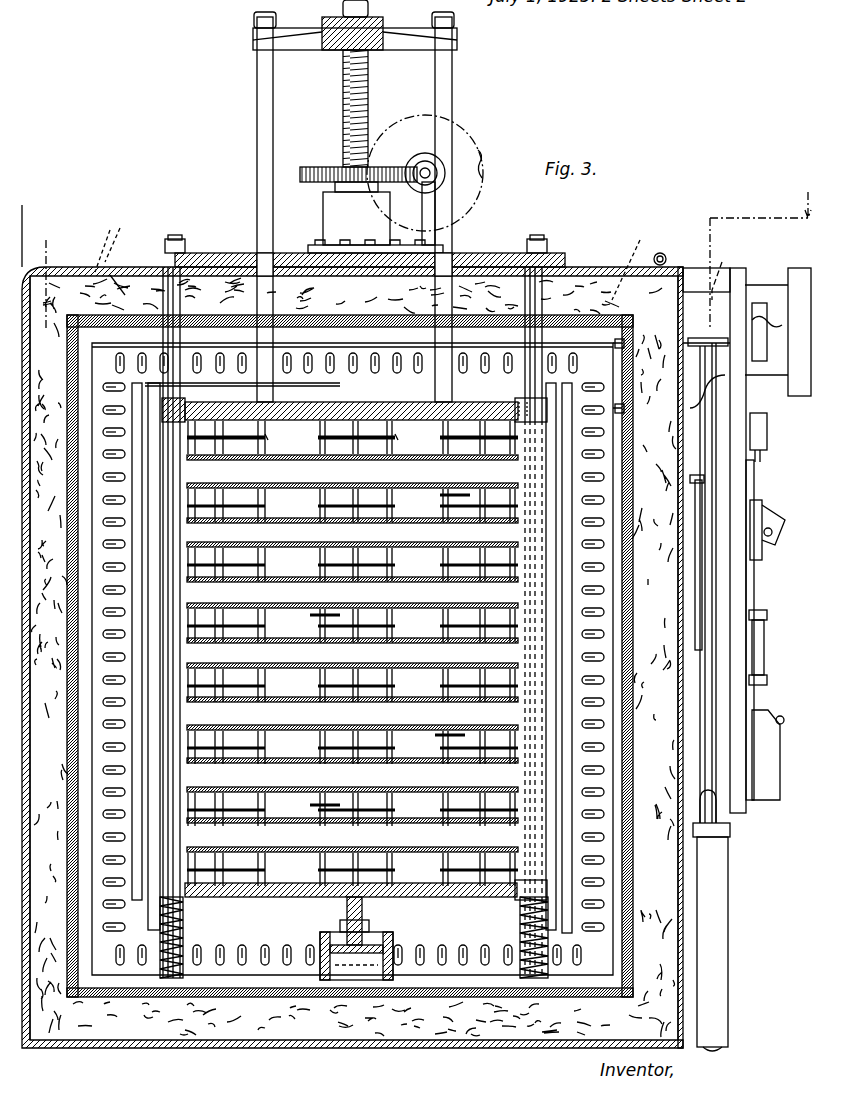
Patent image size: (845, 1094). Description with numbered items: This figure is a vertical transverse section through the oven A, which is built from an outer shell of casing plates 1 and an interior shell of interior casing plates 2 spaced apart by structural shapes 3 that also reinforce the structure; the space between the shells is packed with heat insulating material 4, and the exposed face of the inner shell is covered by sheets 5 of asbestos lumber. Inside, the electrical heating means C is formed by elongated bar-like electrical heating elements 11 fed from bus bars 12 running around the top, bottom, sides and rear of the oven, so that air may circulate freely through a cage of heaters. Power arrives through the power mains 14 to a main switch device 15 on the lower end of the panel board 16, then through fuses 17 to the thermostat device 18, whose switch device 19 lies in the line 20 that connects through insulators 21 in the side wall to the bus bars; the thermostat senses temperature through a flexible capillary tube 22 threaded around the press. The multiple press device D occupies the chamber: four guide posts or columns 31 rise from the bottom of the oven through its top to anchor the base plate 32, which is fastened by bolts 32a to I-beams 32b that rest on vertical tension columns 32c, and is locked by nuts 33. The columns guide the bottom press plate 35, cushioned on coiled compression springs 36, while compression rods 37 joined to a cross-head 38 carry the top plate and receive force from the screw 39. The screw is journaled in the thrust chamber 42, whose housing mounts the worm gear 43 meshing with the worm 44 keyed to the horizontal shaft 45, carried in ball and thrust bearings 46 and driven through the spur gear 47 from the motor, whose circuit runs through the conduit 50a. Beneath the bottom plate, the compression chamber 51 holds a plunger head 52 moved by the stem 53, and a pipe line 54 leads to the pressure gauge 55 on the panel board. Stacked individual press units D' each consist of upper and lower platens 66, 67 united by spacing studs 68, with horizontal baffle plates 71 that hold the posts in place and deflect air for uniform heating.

The casing plates 1 is at (560, 268).
The interior casing plates 2 is at (580, 300).
The structural shapes 3 is at (445, 998).
The heat insulating material 4 is at (130, 285).
The sheets of asbestos lumber 5 is at (690, 742).
The electrical heating elements 11 is at (150, 708).
The bus bars 12 is at (568, 350).
The power mains 14 is at (715, 898).
The main switch device 15 is at (770, 774).
The panel board 16 is at (748, 700).
The fuses 17 is at (764, 644).
The thermostat device 18 is at (798, 270).
The switch device 19 is at (775, 520).
The line 20 is at (713, 380).
The insulators 21 is at (700, 340).
The flexible capillary tube 22 is at (312, 445).
The guide posts or columns 31 is at (170, 383).
The base plate 32 is at (225, 256).
The bolts 32a is at (325, 243).
The I-beams 32b is at (373, 251).
The vertical tension columns 32c is at (388, 274).
The nuts 33 is at (178, 240).
The bottom press plate 35 is at (283, 890).
The coiled compression springs 36 is at (185, 912).
The compression rods 37 is at (262, 80).
The cross-head 38 is at (435, 42).
The screw 39 is at (345, 82).
The thrust chamber 42 is at (356, 218).
The worm gear 43 is at (308, 167).
The worm 44 is at (437, 185).
The horizontal shaft 45 is at (430, 173).
The ball and thrust bearings 46 is at (425, 222).
The spur gear 47 is at (478, 148).
The conduit 50a is at (665, 254).
The compression chamber 51 is at (538, 236).
The plunger head 52 is at (393, 940).
The stem 53 is at (365, 912).
The pipe line 54 is at (210, 418).
The pressure gauge 55 is at (768, 425).
The upper platens 66 is at (400, 483).
The lower platens 67 is at (365, 450).
The spacing studs 68 is at (250, 440).
The baffle plates 71 is at (482, 445).
The oven A is at (118, 272).
The electrical heating means C is at (159, 367).
The multiple press device D is at (352, 421).
The individual press units D' is at (377, 655).